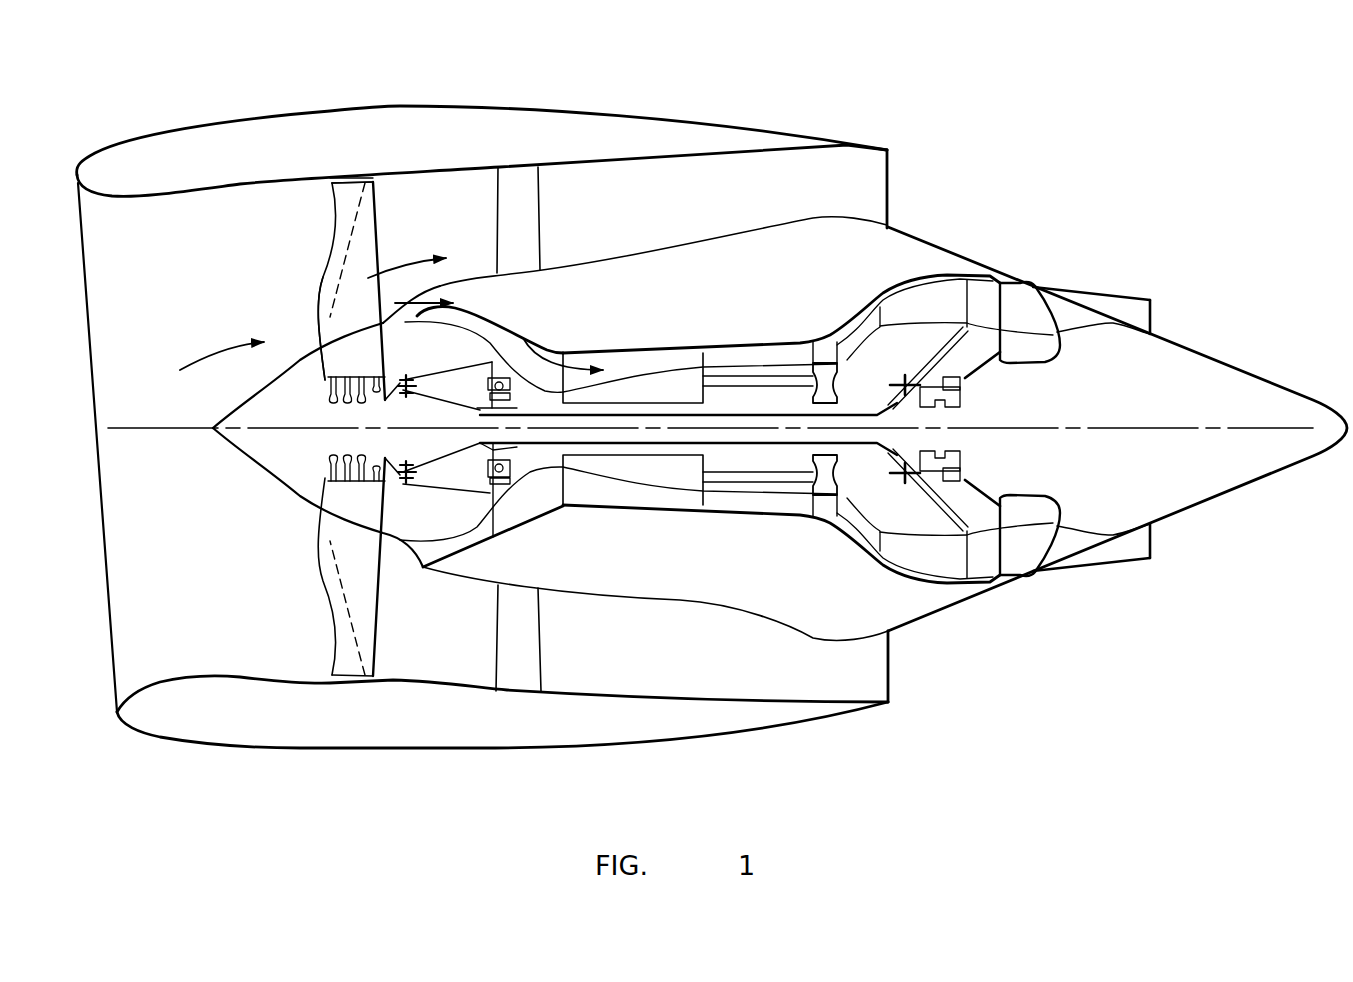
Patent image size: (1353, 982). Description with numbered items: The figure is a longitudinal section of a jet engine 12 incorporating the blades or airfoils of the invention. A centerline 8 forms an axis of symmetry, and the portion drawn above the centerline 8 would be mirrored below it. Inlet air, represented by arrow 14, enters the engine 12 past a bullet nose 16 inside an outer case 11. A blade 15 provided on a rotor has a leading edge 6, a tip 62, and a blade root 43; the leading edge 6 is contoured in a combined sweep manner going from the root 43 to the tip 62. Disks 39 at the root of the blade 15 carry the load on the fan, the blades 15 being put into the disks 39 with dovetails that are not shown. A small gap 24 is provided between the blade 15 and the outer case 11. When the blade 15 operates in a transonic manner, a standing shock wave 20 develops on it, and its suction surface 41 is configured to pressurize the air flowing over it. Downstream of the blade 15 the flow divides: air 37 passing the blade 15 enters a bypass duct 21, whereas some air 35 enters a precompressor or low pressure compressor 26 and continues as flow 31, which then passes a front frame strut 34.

The leading edge 6 is at (333, 217).
The centerline 8 is at (197, 430).
The outer case 11 is at (408, 107).
The jet engine 12 is at (753, 101).
The inlet air 14 is at (213, 353).
The blade 15 is at (372, 318).
The bullet nose 16 is at (240, 405).
The standing shock wave 20 is at (337, 267).
The bypass duct 21 is at (487, 218).
The small gap 24 is at (377, 183).
The low pressure compressor 26 is at (477, 313).
The flow 31 is at (550, 367).
The front frame strut 34 is at (542, 202).
The air 35 is at (410, 314).
The air 37 is at (397, 263).
The disks 39 is at (372, 358).
The suction surface 41 is at (320, 298).
The blade root 43 is at (323, 320).
The tip 62 is at (357, 178).